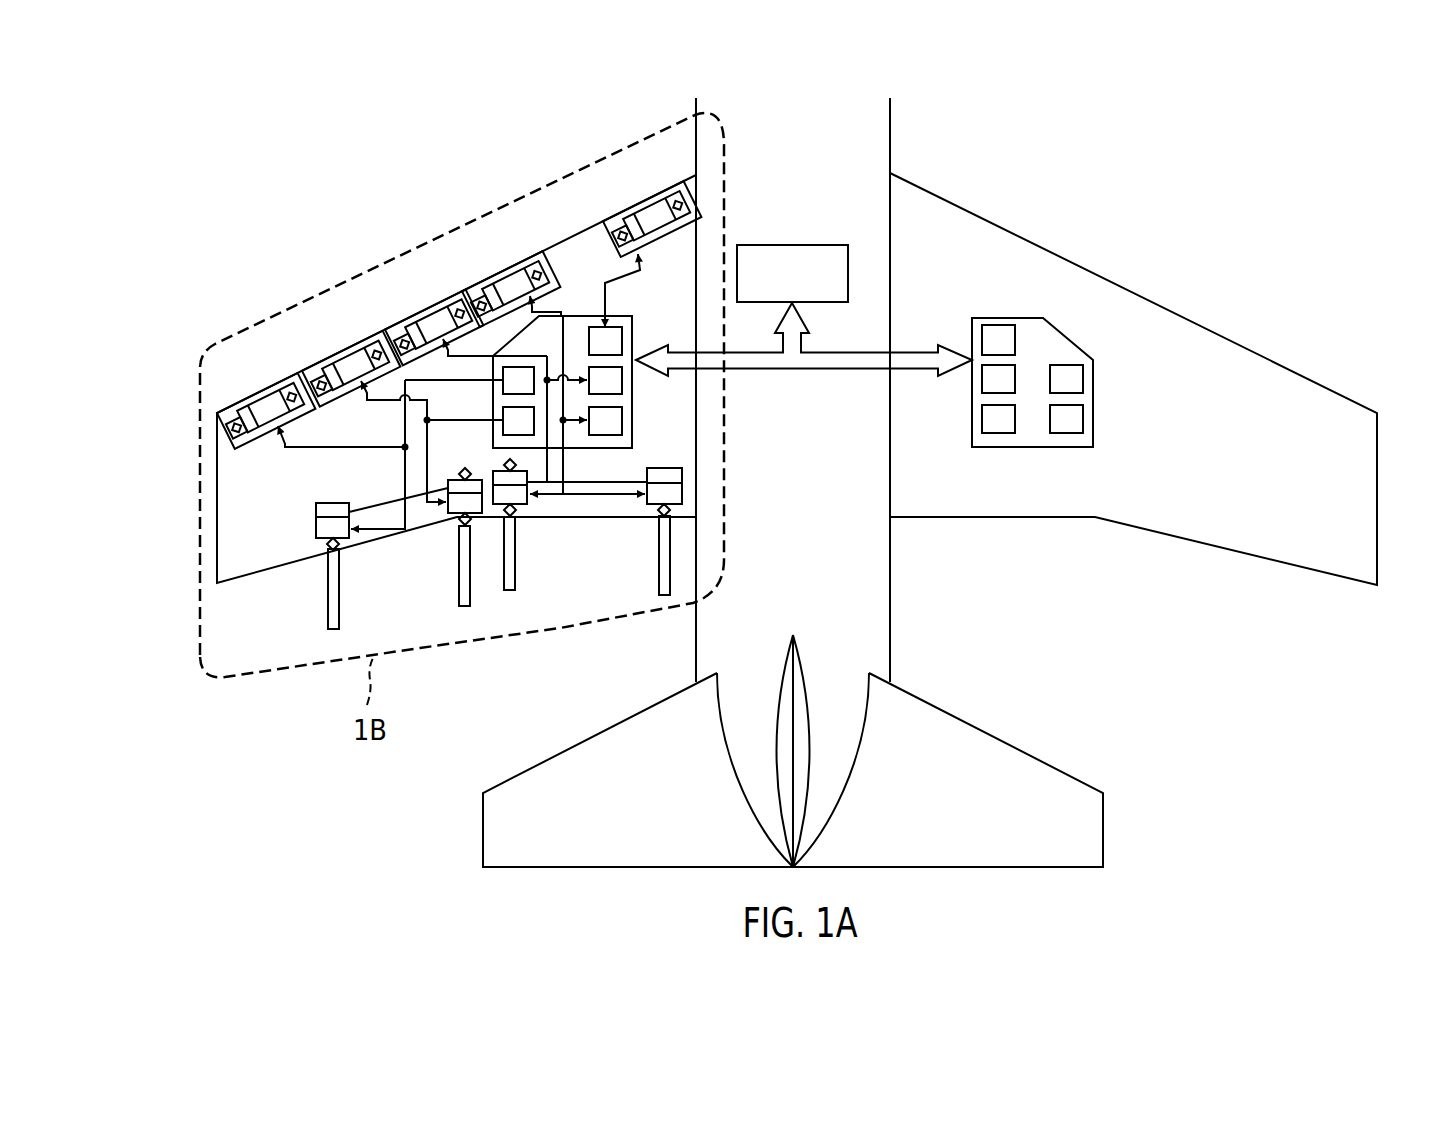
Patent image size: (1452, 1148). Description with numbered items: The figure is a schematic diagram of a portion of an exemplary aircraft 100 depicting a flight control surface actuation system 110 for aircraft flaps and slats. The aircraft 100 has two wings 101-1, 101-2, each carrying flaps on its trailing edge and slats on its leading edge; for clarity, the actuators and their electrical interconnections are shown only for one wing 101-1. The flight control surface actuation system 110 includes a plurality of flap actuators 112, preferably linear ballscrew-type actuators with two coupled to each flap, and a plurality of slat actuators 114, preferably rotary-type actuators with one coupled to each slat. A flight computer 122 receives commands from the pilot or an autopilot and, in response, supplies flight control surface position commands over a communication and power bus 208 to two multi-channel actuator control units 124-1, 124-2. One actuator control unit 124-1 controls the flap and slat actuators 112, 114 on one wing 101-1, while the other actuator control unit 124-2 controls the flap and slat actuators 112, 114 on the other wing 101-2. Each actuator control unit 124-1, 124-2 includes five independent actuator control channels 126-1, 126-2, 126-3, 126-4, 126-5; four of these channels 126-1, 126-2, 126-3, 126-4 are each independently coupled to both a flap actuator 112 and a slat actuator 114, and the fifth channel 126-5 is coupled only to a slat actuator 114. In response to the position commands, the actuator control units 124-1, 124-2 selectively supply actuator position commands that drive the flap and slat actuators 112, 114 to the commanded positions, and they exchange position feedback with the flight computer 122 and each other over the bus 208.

The aircraft 100 is at (793, 482).
The wing 101-1 is at (217, 541).
The wing 101-2 is at (1374, 523).
The flight control surface actuation system 110 is at (686, 394).
The flap actuator 112 is at (476, 553).
The slat actuator 114 is at (459, 280).
The flight computer 122 is at (850, 272).
The actuator control unit 124-1 is at (633, 333).
The actuator control unit 124-2 is at (1032, 391).
The independent actuator control channel 126-1 is at (987, 382).
The independent actuator control channel 126-2 is at (990, 422).
The independent actuator control channel 126-3 is at (1078, 380).
The independent actuator control channel 126-4 is at (1078, 422).
The independent actuator control channel 126-5 is at (1000, 332).
The communication and power bus 208 is at (793, 373).